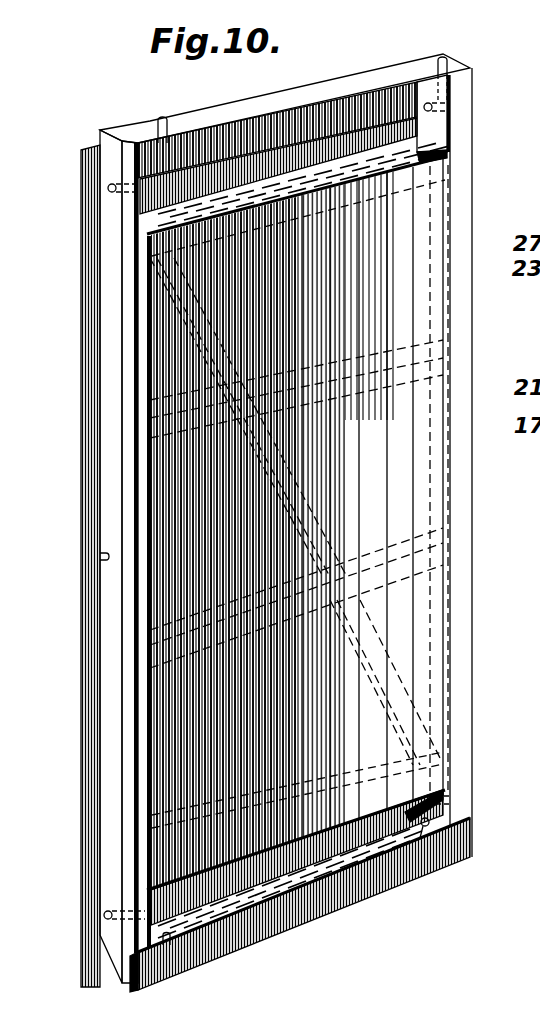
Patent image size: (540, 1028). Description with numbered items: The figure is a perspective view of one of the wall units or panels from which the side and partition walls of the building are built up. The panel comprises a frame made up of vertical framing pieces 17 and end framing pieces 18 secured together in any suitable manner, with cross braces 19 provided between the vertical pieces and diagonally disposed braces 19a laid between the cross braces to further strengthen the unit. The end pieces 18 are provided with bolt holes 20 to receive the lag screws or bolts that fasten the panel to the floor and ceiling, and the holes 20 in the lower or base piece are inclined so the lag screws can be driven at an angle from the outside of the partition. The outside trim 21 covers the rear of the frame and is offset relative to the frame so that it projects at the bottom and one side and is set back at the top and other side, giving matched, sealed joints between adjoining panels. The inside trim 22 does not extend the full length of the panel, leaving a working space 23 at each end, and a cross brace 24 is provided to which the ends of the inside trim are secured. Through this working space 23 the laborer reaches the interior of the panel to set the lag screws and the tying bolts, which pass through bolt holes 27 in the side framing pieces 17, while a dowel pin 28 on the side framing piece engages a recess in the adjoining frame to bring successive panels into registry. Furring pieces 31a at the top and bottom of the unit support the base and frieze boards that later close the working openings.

The vertical framing pieces 17 is at (462, 150).
The end framing pieces 18 is at (236, 106).
The cross braces 19 is at (447, 345).
The diagonally disposed braces 19a is at (420, 692).
The bolt holes 20 is at (163, 117).
The outside trim 21 is at (88, 300).
The inside trim 22 is at (460, 245).
The working space 23 is at (425, 130).
The cross brace 24 is at (433, 165).
The bolt holes 27 is at (108, 189).
The dowel pin 28 is at (73, 576).
The furring pieces 31a is at (298, 101).